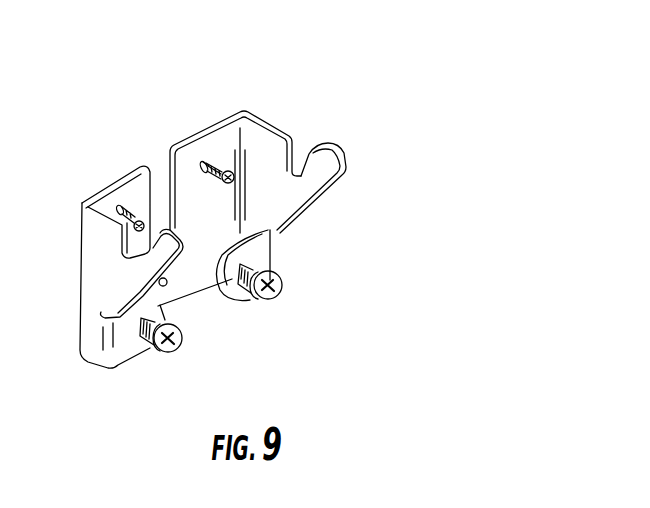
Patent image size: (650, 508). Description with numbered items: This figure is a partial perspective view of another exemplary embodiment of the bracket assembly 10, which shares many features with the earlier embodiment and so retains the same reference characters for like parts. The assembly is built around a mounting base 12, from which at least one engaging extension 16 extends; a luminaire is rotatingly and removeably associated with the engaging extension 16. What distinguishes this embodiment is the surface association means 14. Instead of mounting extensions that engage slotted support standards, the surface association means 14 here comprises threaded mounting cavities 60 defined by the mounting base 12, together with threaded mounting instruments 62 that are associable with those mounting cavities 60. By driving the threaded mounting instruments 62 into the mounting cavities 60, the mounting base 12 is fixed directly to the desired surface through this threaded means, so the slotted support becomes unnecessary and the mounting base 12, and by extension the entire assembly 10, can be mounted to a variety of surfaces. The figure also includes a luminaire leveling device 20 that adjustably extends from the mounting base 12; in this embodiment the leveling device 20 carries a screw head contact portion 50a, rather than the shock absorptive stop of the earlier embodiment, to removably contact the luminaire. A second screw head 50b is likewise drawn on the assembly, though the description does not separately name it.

The bracket assembly 10 is at (250, 85).
The mounting base 12 is at (199, 268).
The surface association means 14 is at (197, 167).
The engaging extension 16 is at (313, 187).
The luminaire leveling device 20 is at (264, 303).
The screw head contact portion 50a is at (276, 296).
The second screw 50b is at (174, 352).
The threaded mounting cavity 60 is at (206, 160).
The threaded mounting instrument 62 is at (213, 176).